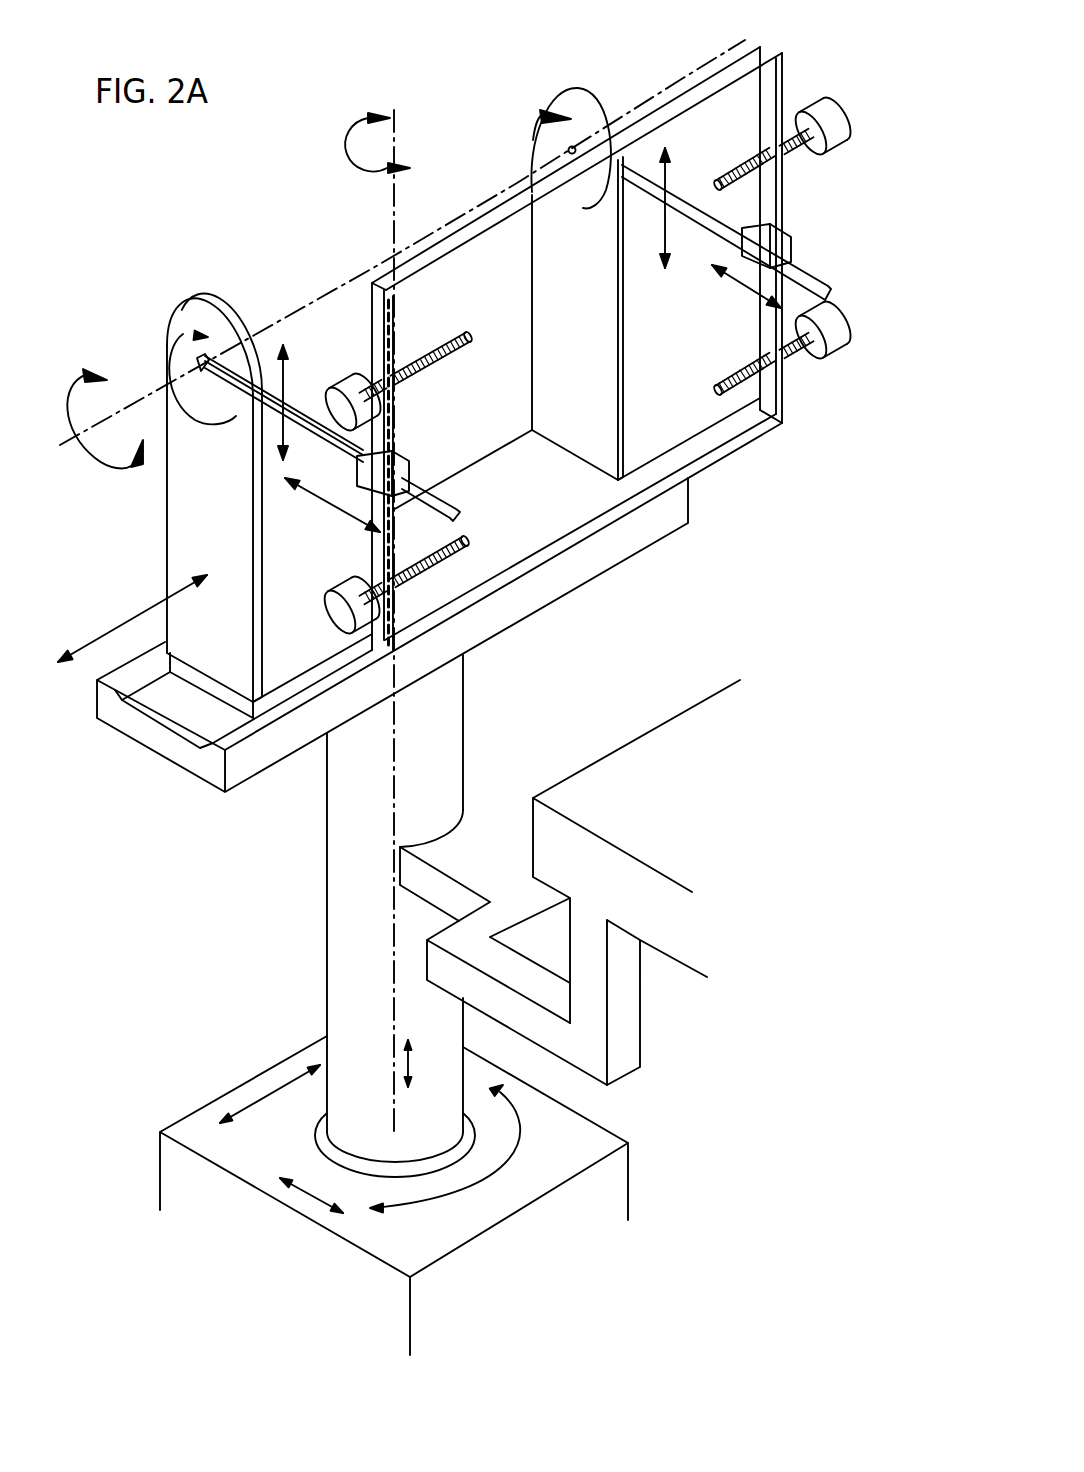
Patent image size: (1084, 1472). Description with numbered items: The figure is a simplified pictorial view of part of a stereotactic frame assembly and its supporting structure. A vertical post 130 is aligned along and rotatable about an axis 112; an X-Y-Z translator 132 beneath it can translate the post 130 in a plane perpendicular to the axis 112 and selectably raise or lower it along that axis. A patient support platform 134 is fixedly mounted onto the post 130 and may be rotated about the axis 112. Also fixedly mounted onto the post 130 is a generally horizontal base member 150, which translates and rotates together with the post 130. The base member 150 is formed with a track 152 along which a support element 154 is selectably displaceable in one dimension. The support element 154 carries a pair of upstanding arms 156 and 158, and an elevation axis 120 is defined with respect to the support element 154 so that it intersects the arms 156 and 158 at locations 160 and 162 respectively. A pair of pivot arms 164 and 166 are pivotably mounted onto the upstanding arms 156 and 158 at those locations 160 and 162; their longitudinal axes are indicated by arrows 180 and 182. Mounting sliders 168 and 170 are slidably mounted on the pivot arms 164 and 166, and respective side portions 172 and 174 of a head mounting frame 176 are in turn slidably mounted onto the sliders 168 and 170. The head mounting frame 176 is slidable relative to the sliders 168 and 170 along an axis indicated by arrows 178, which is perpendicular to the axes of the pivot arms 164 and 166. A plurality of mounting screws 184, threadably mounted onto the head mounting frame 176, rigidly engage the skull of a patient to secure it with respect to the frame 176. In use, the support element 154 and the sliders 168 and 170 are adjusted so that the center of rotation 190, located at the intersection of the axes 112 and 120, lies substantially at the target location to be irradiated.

The axis 112 is at (393, 143).
The elevation axis 120 is at (691, 86).
The post 130 is at (343, 963).
The X-Y-Z translator 132 is at (607, 1167).
The patient support platform 134 is at (480, 880).
The horizontal base member 150 is at (245, 763).
The track 152 is at (168, 703).
The support element 154 is at (605, 419).
The upstanding arm 156 is at (173, 545).
The upstanding arm 158 is at (547, 265).
The location 160 is at (175, 370).
The location 162 is at (575, 147).
The pivot arm 164 is at (445, 496).
The pivot arm 166 is at (820, 286).
The mounting slider 168 is at (403, 457).
The mounting slider 170 is at (788, 240).
The side portion 172 is at (370, 294).
The side portion 174 is at (772, 80).
The head mounting frame 176 is at (762, 44).
The arrows 178 is at (276, 335).
The arrows 180 is at (318, 490).
The arrows 182 is at (747, 300).
The mounting screws 184 is at (840, 123).
The center of rotation 190 is at (393, 252).